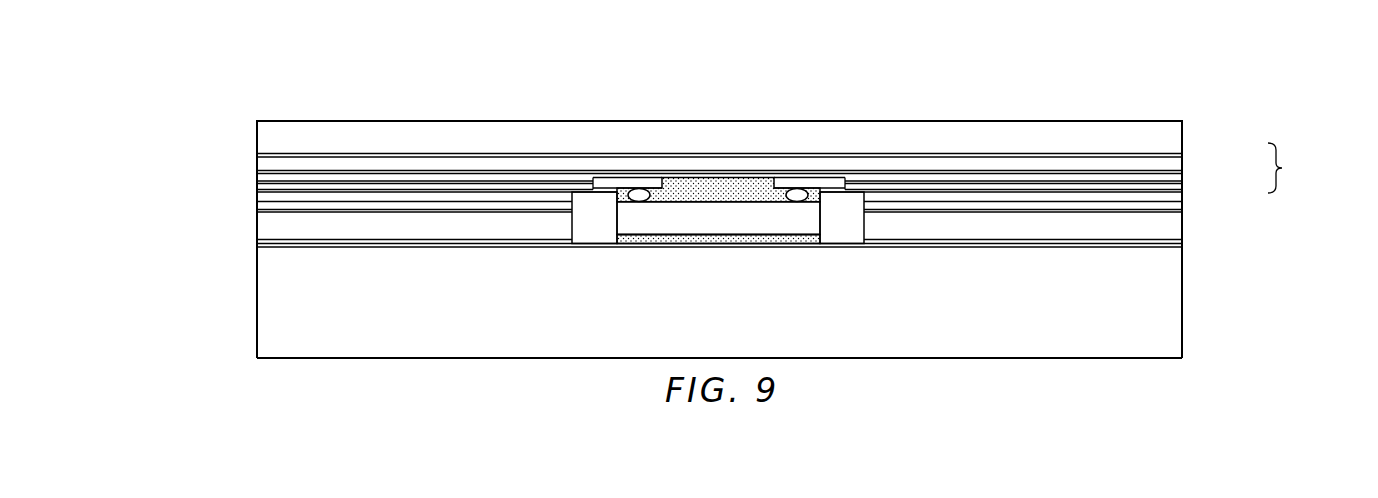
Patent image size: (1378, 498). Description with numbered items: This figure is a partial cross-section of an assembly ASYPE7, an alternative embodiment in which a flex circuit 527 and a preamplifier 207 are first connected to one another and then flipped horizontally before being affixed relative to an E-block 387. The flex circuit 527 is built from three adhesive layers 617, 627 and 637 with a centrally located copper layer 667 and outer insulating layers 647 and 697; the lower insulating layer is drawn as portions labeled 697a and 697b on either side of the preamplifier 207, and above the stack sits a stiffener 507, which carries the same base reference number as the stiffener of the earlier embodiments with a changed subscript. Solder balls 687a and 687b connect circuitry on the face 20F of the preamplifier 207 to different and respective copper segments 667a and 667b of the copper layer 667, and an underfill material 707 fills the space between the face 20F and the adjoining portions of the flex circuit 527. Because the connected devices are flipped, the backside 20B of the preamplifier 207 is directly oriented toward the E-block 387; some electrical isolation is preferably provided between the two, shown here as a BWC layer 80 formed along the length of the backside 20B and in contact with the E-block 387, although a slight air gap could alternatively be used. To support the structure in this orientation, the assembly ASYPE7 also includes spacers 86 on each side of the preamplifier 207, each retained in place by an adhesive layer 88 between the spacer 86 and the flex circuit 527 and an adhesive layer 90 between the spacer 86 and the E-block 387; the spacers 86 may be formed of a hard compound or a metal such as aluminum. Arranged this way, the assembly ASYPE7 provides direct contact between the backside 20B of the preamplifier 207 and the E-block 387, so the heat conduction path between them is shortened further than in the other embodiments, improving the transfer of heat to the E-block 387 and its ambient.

The assembly ASYPE7 is at (928, 80).
The E-block 387 is at (576, 335).
The stiffener 507 is at (449, 130).
The adhesive layer 617 is at (1183, 157).
The insulating layer 647 is at (265, 166).
The adhesive layer 627 is at (1183, 175).
The copper layer 667 is at (158, 181).
The copper segment 667a is at (265, 183).
The copper segment 667b is at (1030, 183).
The adhesive layer 637 is at (1183, 190).
The insulating layer 697 is at (158, 203).
The layer portion a 697a is at (265, 199).
The layer portion b 697b is at (1170, 199).
The flex circuit 527 is at (1296, 168).
The adhesive layer 88 is at (445, 212).
The spacer 86 is at (353, 228).
The adhesive layer 90 is at (518, 247).
The solder ball 687a is at (617, 193).
The solder ball 687b is at (820, 193).
The underfill material 707 is at (752, 185).
The face 20F is at (697, 190).
The preamplifier 207 is at (755, 225).
The backside 20B is at (677, 243).
The BWC layer 80 is at (725, 244).